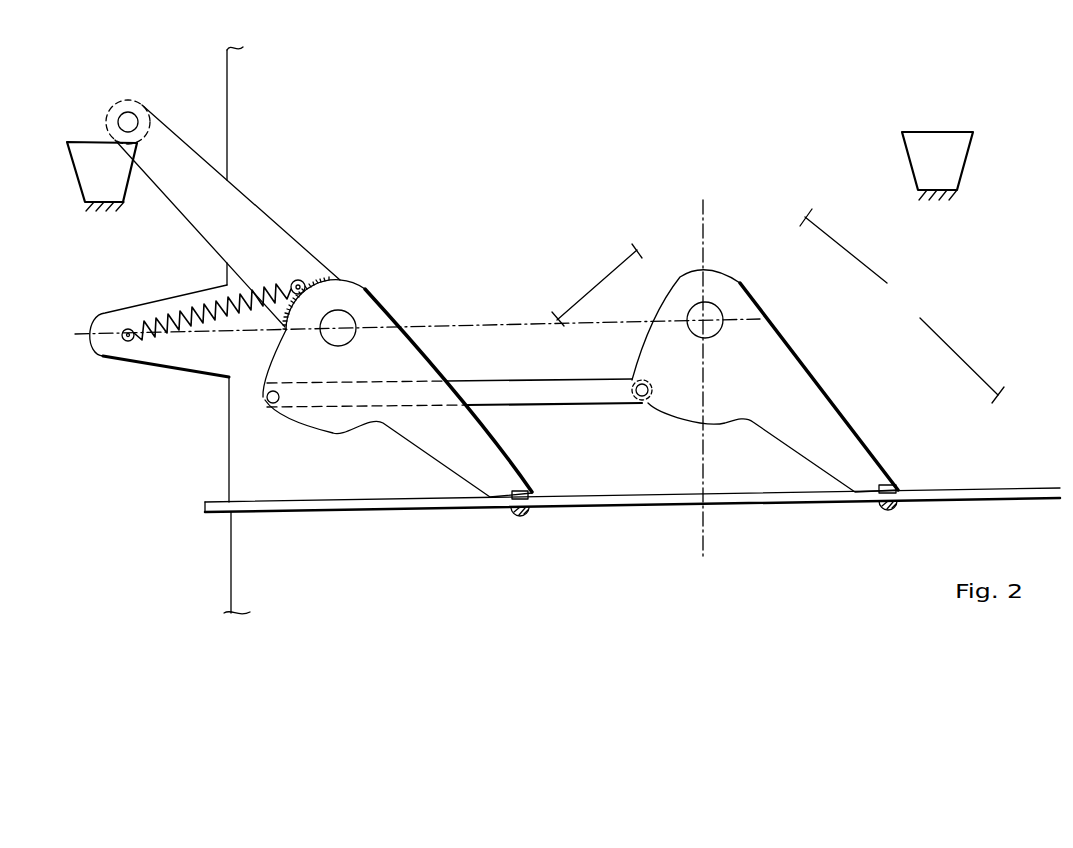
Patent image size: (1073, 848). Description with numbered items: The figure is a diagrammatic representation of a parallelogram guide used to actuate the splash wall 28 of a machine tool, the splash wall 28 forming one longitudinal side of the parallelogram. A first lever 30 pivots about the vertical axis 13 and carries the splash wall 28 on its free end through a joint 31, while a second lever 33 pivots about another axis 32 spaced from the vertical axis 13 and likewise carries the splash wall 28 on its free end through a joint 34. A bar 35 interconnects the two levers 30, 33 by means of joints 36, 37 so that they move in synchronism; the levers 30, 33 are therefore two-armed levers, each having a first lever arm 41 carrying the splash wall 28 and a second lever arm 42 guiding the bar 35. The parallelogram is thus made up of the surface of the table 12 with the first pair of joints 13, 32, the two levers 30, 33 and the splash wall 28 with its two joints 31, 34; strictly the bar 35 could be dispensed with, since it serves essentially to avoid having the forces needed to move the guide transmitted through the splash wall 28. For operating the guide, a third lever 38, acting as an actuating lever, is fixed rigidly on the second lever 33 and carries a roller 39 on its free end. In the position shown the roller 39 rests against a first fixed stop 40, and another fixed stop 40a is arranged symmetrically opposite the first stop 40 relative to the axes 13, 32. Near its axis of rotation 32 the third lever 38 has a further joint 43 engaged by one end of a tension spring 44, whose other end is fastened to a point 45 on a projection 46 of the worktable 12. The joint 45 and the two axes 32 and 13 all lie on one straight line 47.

The table 12 is at (255, 577).
The vertical axis 13 is at (712, 310).
The splash wall 28 is at (1028, 493).
The first lever 30 is at (827, 418).
The joint 31 is at (883, 513).
The axis 32 is at (340, 325).
The second lever 33 is at (492, 462).
The joint 34 is at (522, 517).
The bar 35 is at (588, 393).
The joint 36 is at (270, 405).
The joint 37 is at (648, 404).
The third lever 38 is at (280, 243).
The roller 39 is at (149, 100).
The first fixed stop 40 is at (88, 182).
The fixed stop 40a is at (953, 170).
The first lever arm 41 is at (902, 303).
The second lever arm 42 is at (597, 283).
The joint 43 is at (303, 280).
The tension spring 44 is at (196, 310).
The point 45 is at (126, 342).
The projection 46 is at (197, 355).
The straight line 47 is at (492, 322).